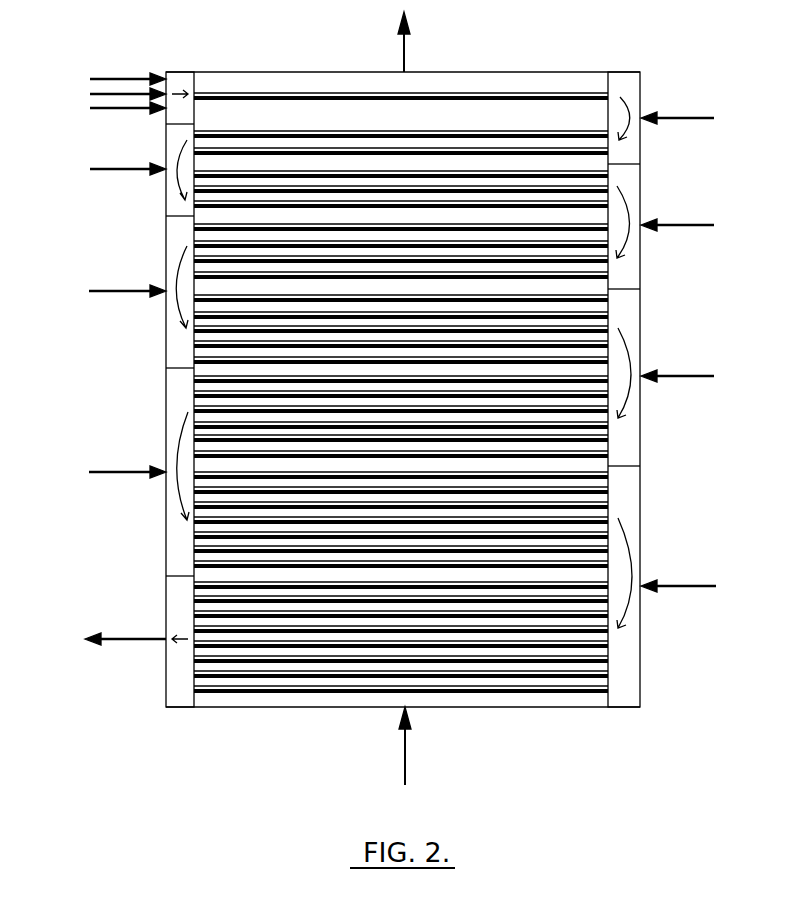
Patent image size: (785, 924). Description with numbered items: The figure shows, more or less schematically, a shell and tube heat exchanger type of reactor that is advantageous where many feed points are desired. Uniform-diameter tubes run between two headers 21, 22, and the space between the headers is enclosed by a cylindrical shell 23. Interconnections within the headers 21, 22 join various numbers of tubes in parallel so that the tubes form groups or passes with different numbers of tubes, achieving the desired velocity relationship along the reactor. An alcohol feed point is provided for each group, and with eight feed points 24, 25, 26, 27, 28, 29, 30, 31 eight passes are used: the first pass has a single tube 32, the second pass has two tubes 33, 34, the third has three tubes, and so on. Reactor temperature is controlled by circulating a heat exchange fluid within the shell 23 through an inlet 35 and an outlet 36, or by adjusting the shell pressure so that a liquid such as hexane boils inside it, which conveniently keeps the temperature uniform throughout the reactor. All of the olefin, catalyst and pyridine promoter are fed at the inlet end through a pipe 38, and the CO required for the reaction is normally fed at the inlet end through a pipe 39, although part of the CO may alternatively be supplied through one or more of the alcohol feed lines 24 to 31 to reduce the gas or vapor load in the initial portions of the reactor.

The header 21 is at (166, 392).
The header 22 is at (643, 433).
The cylindrical shell 23 is at (235, 71).
The feed point 24 is at (103, 79).
The feed point 25 is at (676, 118).
The feed point 26 is at (120, 169).
The feed point 27 is at (678, 225).
The feed point 28 is at (115, 291).
The feed point 29 is at (678, 376).
The feed point 30 is at (115, 472).
The feed point 31 is at (683, 586).
The tube 32 is at (267, 96).
The tube 33 is at (428, 134).
The tube 34 is at (494, 152).
The inlet 35 is at (405, 760).
The outlet 36 is at (400, 52).
The pipe 38 is at (130, 94).
The pipe 39 is at (120, 108).